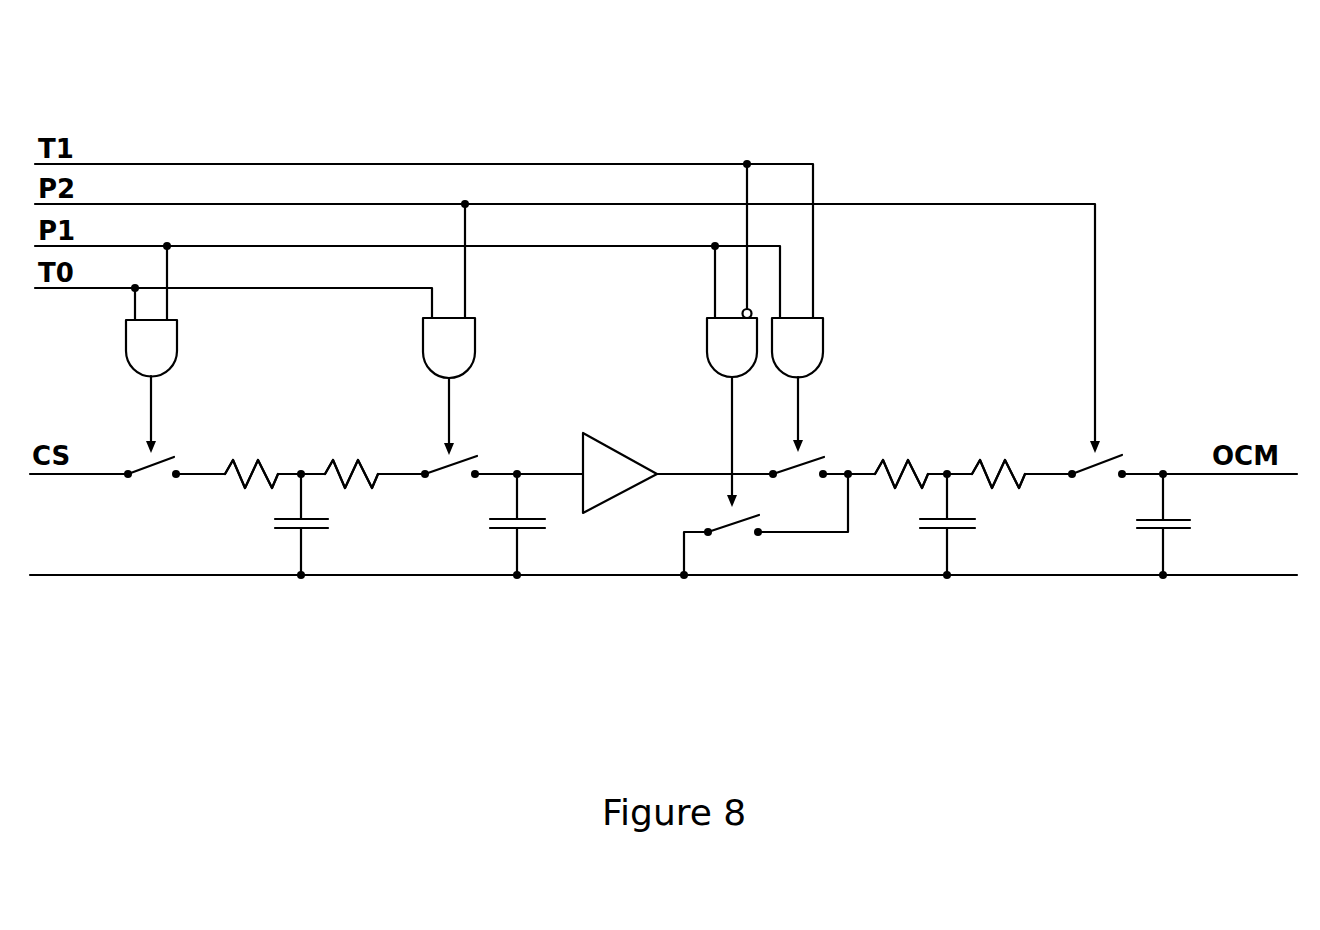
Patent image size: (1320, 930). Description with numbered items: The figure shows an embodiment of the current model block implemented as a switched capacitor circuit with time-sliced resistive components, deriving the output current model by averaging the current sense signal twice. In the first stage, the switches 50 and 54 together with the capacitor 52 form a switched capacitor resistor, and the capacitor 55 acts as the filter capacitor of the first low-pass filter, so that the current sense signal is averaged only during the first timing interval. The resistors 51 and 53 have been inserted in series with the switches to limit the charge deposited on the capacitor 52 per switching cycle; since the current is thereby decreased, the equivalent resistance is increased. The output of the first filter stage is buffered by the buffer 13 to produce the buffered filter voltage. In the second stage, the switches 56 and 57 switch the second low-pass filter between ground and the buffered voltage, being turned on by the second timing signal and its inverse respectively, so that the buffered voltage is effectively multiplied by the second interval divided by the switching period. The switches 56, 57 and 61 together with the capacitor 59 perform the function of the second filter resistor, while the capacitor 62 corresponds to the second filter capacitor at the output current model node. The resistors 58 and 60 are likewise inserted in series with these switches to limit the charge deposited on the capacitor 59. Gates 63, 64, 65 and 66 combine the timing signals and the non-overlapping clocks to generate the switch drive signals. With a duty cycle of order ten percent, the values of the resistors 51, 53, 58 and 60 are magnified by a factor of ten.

The buffer 13 is at (620, 464).
The switch 50 is at (152, 485).
The resistor 51 is at (251, 460).
The capacitor 52 is at (311, 524).
The resistor 53 is at (351, 460).
The switch 54 is at (450, 483).
The capacitor 55 is at (527, 524).
The switch 56 is at (798, 485).
The switch 57 is at (766, 524).
The resistor 58 is at (901, 460).
The capacitor 59 is at (957, 524).
The resistor 60 is at (998, 460).
The switch 61 is at (1097, 484).
The capacitor 62 is at (1174, 524).
The AND gate 63 is at (173, 386).
The AND gate 64 is at (470, 386).
The AND gate 65 is at (723, 412).
The AND gate 66 is at (820, 385).